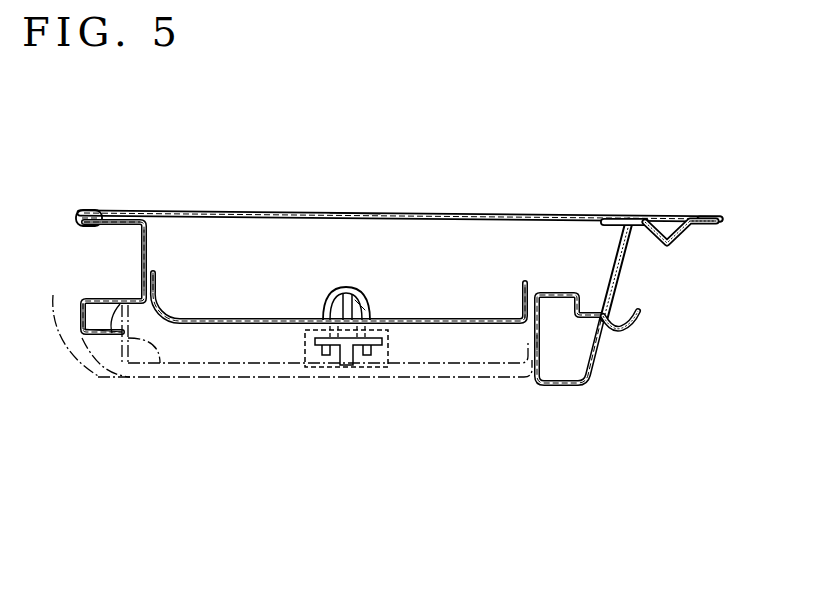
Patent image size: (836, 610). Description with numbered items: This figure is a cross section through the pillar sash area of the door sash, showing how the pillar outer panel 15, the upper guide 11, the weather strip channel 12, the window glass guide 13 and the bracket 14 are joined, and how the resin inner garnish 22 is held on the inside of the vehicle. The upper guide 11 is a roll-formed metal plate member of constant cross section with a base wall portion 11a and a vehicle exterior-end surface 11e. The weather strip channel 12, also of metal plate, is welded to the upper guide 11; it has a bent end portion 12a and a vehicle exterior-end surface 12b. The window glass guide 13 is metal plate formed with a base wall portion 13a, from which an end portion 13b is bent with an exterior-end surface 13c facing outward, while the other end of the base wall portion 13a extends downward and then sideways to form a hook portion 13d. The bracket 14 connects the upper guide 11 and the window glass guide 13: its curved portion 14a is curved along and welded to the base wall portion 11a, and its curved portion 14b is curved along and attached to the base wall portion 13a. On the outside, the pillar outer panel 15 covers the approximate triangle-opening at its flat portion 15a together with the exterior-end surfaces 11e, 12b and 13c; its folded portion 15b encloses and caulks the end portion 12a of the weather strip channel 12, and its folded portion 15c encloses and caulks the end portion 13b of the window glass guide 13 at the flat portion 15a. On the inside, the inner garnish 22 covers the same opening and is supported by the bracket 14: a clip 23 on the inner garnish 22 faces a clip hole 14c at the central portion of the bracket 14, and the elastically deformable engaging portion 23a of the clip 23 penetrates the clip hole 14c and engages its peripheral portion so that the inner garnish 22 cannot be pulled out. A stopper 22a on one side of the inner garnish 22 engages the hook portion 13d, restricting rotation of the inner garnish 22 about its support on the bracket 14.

The upper guide 11 is at (562, 386).
The base wall portion 11a is at (532, 344).
The exterior-end surface 11e is at (616, 216).
The weather strip channel 12 is at (640, 318).
The end portion 12a is at (703, 228).
The exterior-end surface 12b is at (696, 216).
The window glass guide 13 is at (141, 270).
The base wall portion 13a is at (150, 232).
The end portion 13b is at (95, 228).
The exterior-end surface 13c is at (124, 212).
The hook portion 13d is at (117, 337).
The bracket 14 is at (270, 318).
The curved portion 14a is at (522, 289).
The curved portion 14b is at (157, 282).
The clip hole 14c is at (362, 305).
The pillar outer panel 15 is at (425, 210).
The flat portion 15a is at (343, 210).
The folded portion 15b is at (723, 220).
The folded portion 15c is at (76, 212).
The inner garnish 22 is at (214, 380).
The stopper 22a is at (154, 370).
The clip 23 is at (329, 370).
The engaging portion 23a is at (345, 290).